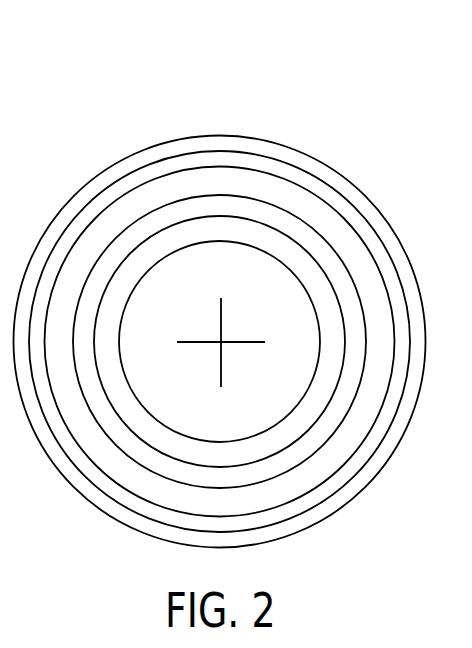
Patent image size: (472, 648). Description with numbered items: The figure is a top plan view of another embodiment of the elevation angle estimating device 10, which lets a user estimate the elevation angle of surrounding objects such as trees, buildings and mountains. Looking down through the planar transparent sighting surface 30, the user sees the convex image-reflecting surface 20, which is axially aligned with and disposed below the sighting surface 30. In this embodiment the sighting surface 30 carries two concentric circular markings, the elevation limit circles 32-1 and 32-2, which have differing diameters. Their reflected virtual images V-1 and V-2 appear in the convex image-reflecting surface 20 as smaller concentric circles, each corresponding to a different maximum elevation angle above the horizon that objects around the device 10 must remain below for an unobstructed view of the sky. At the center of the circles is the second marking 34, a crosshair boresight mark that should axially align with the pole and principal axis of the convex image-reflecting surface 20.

The elevation angle estimating device 10 is at (138, 88).
The convex image-reflecting surface 20 is at (77, 303).
The planar transparent sighting surface 30 is at (371, 203).
The elevation limit circle 32-1 is at (381, 240).
The elevation limit circle 32-2 is at (392, 305).
The second marking (boresight mark) 34 is at (201, 342).
The reflected image of elevation limit circle 32-1 V-1 is at (238, 217).
The reflected image of elevation limit circle 32-2 V-2 is at (282, 263).